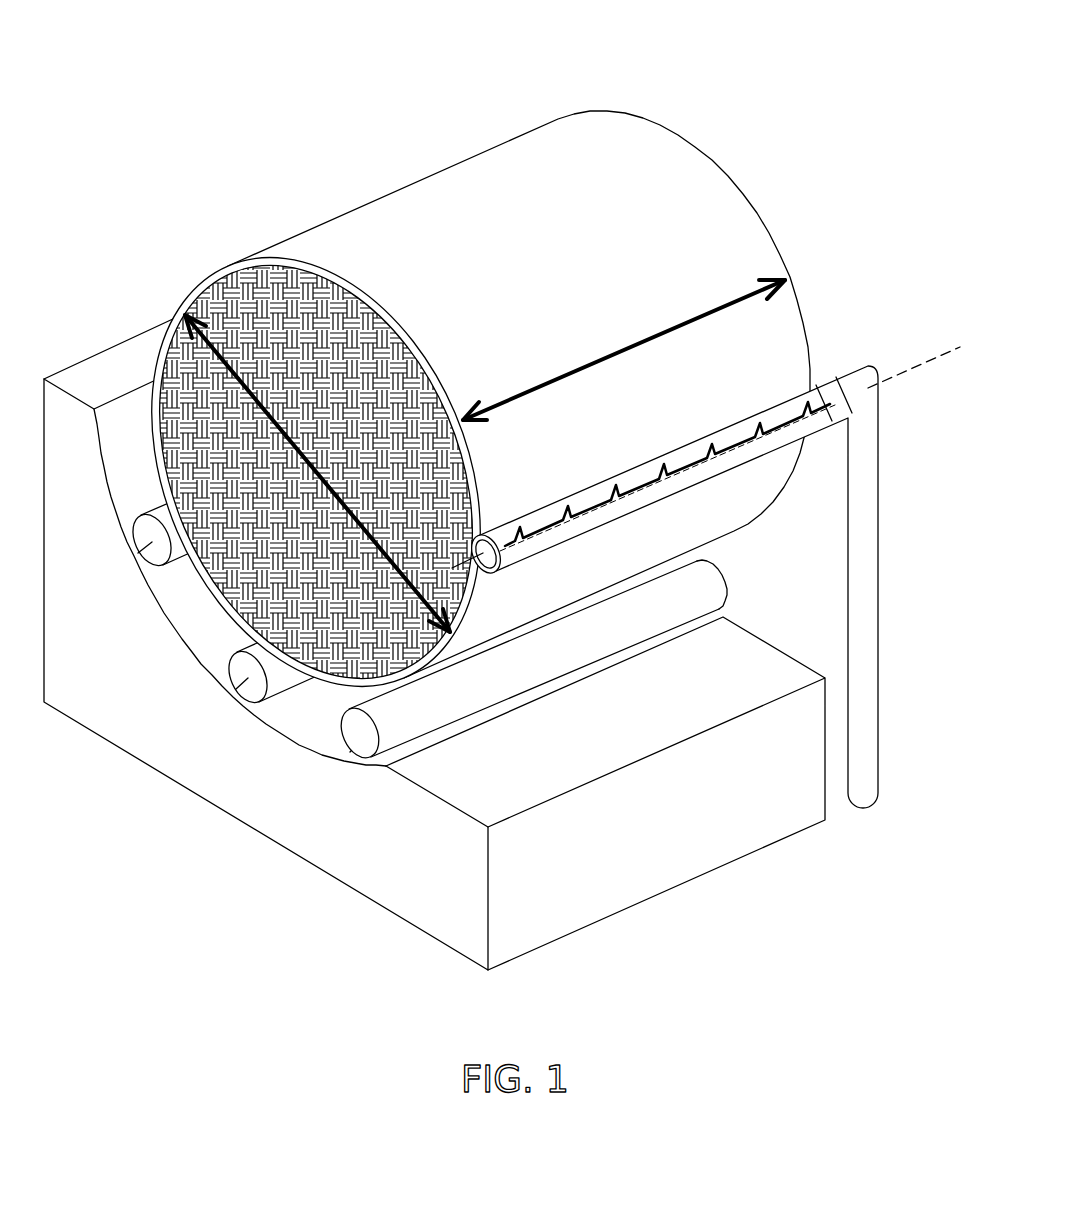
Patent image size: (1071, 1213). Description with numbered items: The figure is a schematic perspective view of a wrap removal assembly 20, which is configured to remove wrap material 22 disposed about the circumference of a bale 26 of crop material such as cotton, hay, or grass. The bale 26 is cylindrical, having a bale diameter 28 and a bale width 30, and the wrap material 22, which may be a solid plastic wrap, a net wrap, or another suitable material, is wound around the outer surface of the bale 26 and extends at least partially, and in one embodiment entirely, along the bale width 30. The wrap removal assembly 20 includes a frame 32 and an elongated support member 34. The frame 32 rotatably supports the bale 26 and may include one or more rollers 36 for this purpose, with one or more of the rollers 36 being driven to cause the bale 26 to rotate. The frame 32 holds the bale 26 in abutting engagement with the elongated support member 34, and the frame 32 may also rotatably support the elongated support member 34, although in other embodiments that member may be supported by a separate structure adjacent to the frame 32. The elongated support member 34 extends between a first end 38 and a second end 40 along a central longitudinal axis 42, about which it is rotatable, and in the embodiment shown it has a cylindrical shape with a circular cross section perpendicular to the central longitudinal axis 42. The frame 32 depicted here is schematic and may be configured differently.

The wrap removal assembly 20 is at (112, 200).
The wrap material 22 is at (600, 162).
The bale 26 is at (247, 532).
The bale diameter 28 is at (453, 487).
The bale width 30 is at (545, 383).
The frame 32 is at (152, 725).
The elongated support member 34 is at (737, 433).
The rollers 36 is at (145, 553).
The first end 38 is at (480, 567).
The second end 40 is at (820, 388).
The central longitudinal axis 42 is at (905, 372).